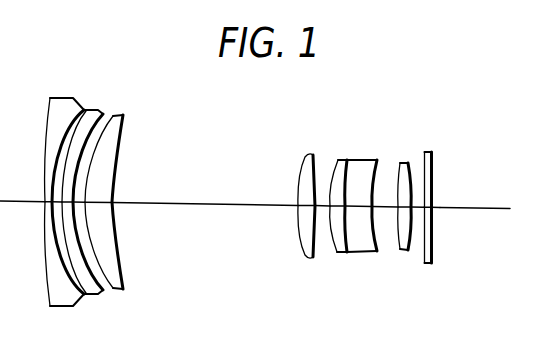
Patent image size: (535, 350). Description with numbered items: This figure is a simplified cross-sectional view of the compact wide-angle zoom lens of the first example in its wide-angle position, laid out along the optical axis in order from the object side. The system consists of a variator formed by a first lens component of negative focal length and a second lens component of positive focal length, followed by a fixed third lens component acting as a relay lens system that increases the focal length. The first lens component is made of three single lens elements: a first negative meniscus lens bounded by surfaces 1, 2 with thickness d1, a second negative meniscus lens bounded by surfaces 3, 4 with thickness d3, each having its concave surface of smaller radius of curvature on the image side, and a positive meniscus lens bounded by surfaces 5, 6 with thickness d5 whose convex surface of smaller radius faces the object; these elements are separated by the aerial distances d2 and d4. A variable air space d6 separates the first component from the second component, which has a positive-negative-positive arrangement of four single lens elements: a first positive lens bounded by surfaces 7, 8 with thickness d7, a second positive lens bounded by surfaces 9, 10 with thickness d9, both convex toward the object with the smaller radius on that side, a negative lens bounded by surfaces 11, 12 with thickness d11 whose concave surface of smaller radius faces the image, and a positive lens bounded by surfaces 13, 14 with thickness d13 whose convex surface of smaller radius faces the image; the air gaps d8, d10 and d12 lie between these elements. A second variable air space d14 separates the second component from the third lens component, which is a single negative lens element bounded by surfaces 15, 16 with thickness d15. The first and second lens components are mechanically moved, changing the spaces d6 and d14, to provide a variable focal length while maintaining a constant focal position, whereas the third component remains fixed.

The first lens surface 1 is at (45, 112).
The second lens surface 2 is at (68, 113).
The third lens surface 3 is at (87, 118).
The fourth lens surface 4 is at (107, 118).
The fifth lens surface 5 is at (118, 122).
The sixth lens surface 6 is at (128, 128).
The seventh lens surface 7 is at (298, 167).
The eighth lens surface 8 is at (316, 165).
The ninth lens surface 9 is at (331, 160).
The tenth lens surface 10 is at (349, 165).
The eleventh lens surface 11 is at (377, 165).
The twelfth lens surface 12 is at (389, 166).
The thirteenth lens surface 13 is at (400, 165).
The fourteenth lens surface 14 is at (418, 168).
The fifteenth lens surface 15 is at (433, 165).
The sixteenth lens surface 16 is at (435, 170).
The thickness of first negative meniscus lens d1 is at (42, 225).
The aerial distance between first and second lenses d2 is at (57, 240).
The thickness of second negative meniscus lens d3 is at (83, 240).
The aerial distance between second and third lenses d4 is at (100, 230).
The thickness of positive meniscus lens d5 is at (118, 248).
The variable aerial distance between first and second lens components d6 is at (290, 235).
The thickness of first positive lens of second component d7 is at (307, 240).
The aerial distance between first and second positive lenses d8 is at (325, 240).
The thickness of second positive lens of second component d9 is at (351, 245).
The aerial distance between second positive lens and negative lens d10 is at (362, 252).
The thickness of negative lens of second component d11 is at (388, 245).
The aerial distance between negative lens and last positive lens d12 is at (405, 245).
The thickness of last positive lens of second component d13 is at (420, 242).
The variable aerial distance between second and third lens components d14 is at (432, 232).
The thickness of third lens component d15 is at (434, 222).